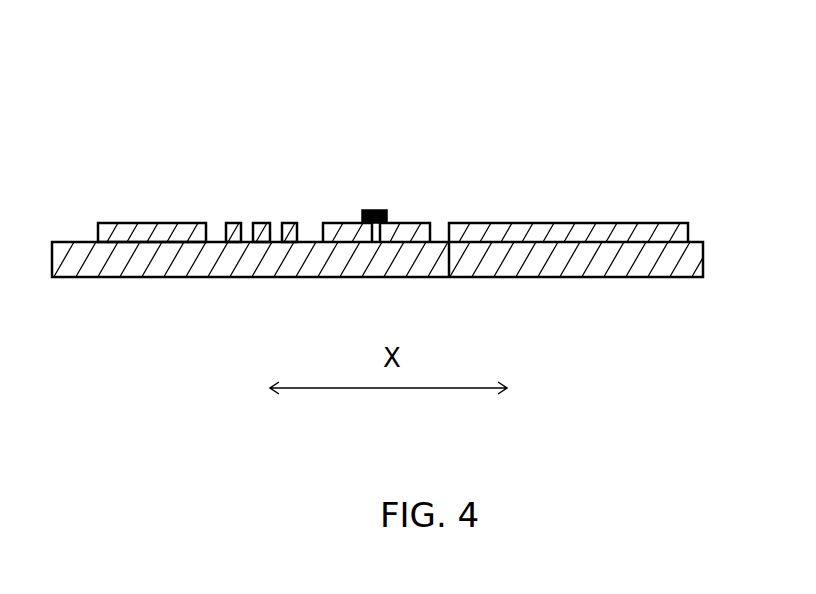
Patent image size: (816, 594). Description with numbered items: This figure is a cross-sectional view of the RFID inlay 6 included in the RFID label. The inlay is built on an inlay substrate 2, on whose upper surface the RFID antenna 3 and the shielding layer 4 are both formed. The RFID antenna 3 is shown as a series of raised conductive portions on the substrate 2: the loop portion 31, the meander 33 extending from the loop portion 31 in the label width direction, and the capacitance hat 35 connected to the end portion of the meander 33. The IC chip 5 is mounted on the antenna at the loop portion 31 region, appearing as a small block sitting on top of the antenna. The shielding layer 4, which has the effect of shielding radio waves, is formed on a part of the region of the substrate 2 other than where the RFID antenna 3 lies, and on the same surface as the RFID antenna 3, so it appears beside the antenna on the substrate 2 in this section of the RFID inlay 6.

The inlay substrate 2 is at (693, 263).
The RFID antenna 3 is at (172, 170).
The loop portion 31 is at (333, 222).
The meander 33 is at (261, 222).
The capacitance hat 35 is at (156, 222).
The shielding layer 4 is at (560, 223).
The IC chip 5 is at (376, 210).
The RFID inlay 6 is at (474, 118).